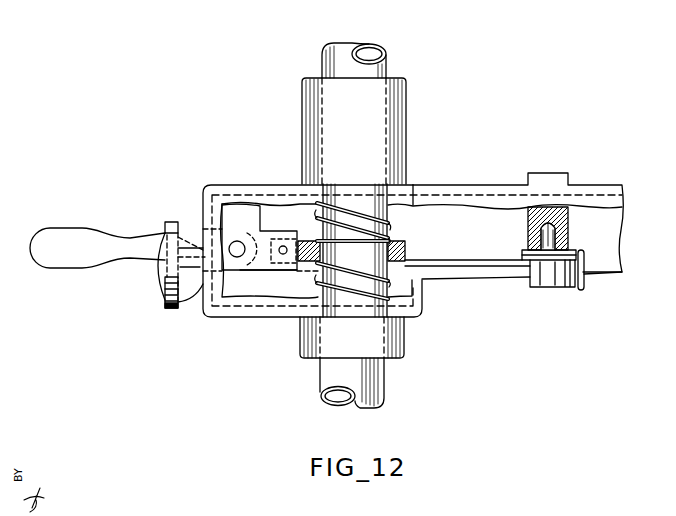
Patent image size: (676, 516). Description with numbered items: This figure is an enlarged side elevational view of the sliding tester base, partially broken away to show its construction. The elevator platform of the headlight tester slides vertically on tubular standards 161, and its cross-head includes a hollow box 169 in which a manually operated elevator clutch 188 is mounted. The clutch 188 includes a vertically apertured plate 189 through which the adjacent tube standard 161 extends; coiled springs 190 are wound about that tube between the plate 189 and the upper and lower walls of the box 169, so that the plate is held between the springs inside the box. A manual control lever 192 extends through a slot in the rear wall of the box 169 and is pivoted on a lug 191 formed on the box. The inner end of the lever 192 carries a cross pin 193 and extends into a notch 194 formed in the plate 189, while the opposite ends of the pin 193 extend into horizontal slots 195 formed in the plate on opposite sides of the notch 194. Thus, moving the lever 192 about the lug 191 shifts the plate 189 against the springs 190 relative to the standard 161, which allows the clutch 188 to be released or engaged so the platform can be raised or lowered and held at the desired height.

The tubular standard 161 is at (376, 378).
The hollow box 169 is at (263, 312).
The elevator clutch 188 is at (198, 226).
The vertically apertured plate 189 is at (405, 251).
The coiled springs 190 is at (388, 213).
The lug 191 is at (262, 229).
The manual control lever 192 is at (126, 243).
The cross pin 193 is at (283, 245).
The notch 194 is at (293, 243).
The horizontal slots 195 is at (261, 256).